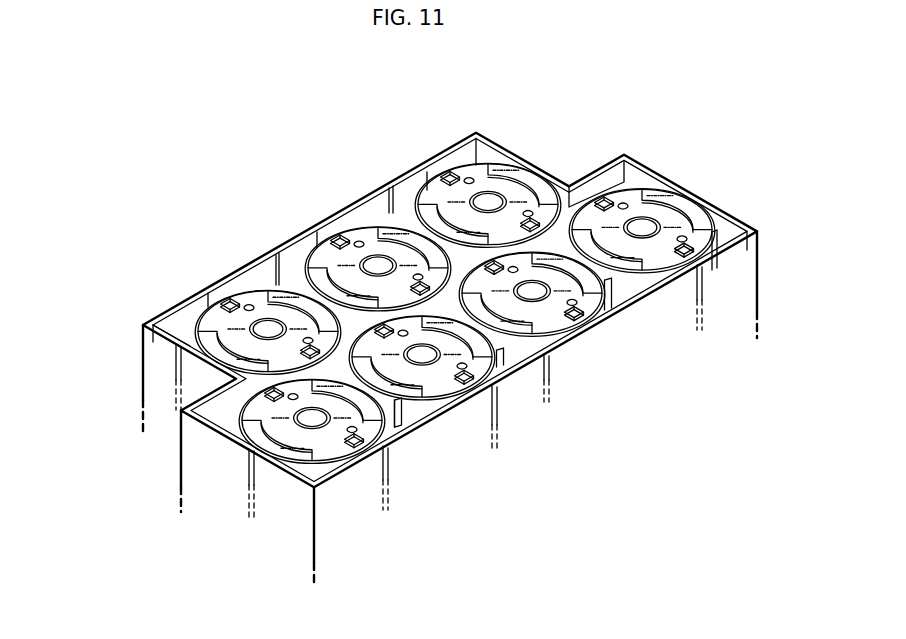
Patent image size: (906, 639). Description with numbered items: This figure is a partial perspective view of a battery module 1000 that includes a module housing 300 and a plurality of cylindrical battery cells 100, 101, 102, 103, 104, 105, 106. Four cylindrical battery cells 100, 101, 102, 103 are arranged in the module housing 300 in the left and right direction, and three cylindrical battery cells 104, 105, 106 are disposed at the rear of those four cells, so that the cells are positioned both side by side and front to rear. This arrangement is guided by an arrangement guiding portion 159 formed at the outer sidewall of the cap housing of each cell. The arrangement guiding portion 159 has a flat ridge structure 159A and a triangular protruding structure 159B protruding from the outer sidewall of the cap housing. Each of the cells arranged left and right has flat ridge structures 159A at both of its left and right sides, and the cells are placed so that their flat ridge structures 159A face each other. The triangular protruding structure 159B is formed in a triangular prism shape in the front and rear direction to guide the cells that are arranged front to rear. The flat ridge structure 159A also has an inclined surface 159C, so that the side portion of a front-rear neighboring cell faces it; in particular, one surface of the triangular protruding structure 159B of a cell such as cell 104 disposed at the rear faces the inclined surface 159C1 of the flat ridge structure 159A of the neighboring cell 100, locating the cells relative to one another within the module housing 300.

The battery module 1000 is at (202, 96).
The module housing 300 is at (493, 141).
The cylindrical battery cell 100 is at (342, 451).
The cylindrical battery cell 101 is at (478, 368).
The cylindrical battery cell 102 is at (587, 307).
The cylindrical battery cell 103 is at (697, 246).
The cylindrical battery cell 104 is at (250, 289).
The cylindrical battery cell 105 is at (356, 226).
The cylindrical battery cell 106 is at (463, 164).
The arrangement guiding portion 159 is at (66, 360).
The flat ridge structure 159A is at (236, 379).
The triangular protruding structure 159B is at (182, 411).
The inclined surface 159C is at (404, 415).
The inclined surface 159C1 is at (187, 327).